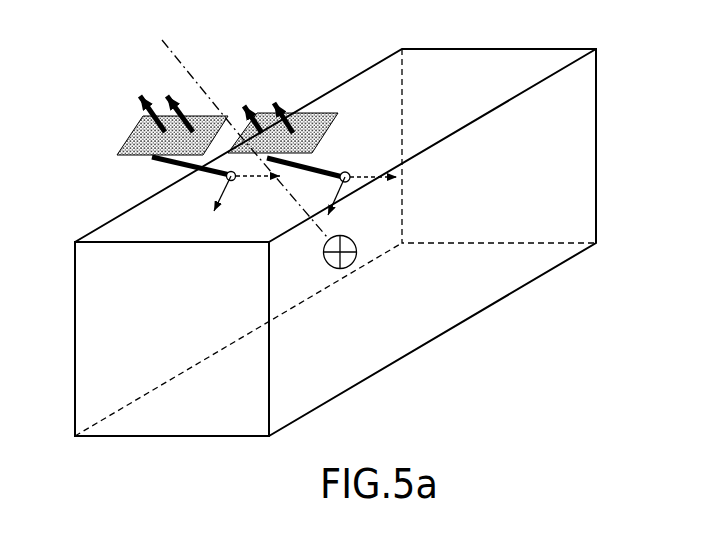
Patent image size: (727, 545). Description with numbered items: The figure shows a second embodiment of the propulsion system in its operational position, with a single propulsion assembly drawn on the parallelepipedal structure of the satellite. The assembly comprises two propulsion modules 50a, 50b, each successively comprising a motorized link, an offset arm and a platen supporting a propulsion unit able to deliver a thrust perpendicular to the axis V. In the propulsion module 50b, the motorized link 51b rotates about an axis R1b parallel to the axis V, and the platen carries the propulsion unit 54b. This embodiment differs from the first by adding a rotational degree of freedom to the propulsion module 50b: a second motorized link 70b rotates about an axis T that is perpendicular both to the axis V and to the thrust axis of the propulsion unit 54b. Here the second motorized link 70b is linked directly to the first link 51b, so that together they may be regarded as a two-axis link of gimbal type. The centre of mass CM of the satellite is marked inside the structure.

The propulsion module 50a is at (150, 78).
The propulsion module 50b is at (260, 68).
The propulsion unit 54b is at (278, 100).
The second motorized link 70b is at (342, 157).
The motorized link 51b is at (346, 172).
The rotation axis R1b is at (378, 180).
The rotation axis T is at (340, 193).
The centre of mass CM is at (357, 260).